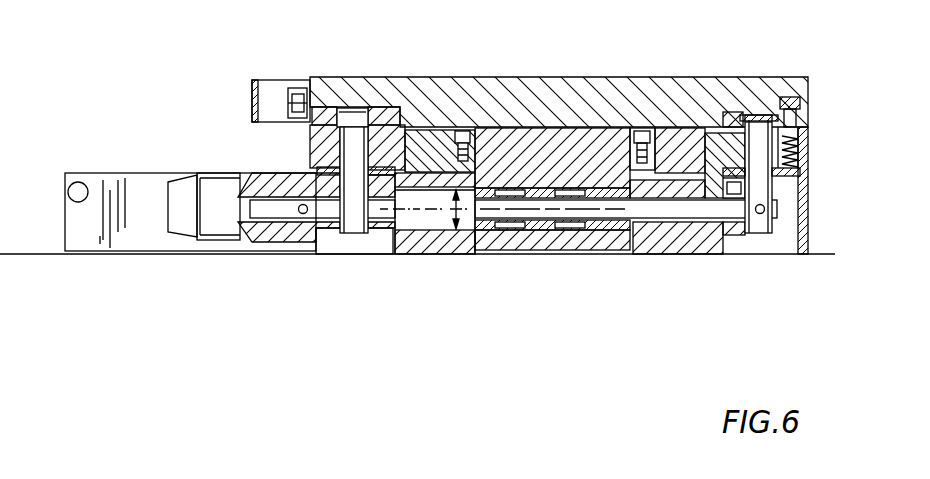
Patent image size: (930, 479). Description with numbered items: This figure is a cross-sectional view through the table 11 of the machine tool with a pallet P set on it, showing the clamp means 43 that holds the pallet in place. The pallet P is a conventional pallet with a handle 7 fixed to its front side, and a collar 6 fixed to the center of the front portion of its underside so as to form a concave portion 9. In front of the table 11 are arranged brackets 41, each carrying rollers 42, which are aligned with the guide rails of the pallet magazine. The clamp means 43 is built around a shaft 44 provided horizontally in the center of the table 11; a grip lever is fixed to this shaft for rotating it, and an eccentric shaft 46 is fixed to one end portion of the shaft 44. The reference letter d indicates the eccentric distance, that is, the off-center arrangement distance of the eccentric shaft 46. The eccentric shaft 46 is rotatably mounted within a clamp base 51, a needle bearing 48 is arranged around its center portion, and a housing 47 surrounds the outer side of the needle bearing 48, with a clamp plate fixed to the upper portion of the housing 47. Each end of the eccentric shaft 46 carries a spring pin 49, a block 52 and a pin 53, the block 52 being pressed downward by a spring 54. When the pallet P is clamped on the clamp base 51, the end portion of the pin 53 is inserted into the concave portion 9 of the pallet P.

The collar 6 is at (332, 108).
The handle 7 is at (252, 97).
The concave portion 9 is at (755, 115).
The table 11 is at (823, 235).
The bracket 41 is at (130, 238).
The roller 42 is at (78, 182).
The clamp means 43 is at (340, 260).
The shaft 44 is at (268, 176).
The eccentric shaft 46 is at (406, 243).
The housing 47 is at (547, 132).
The needle bearing 48 is at (582, 250).
The spring pin 49 is at (770, 190).
The clamp base 51 is at (680, 245).
The block 52 is at (800, 171).
The pin 53 is at (766, 124).
The spring 54 is at (808, 135).
The pallet P is at (401, 90).
The eccentric distance d is at (457, 226).